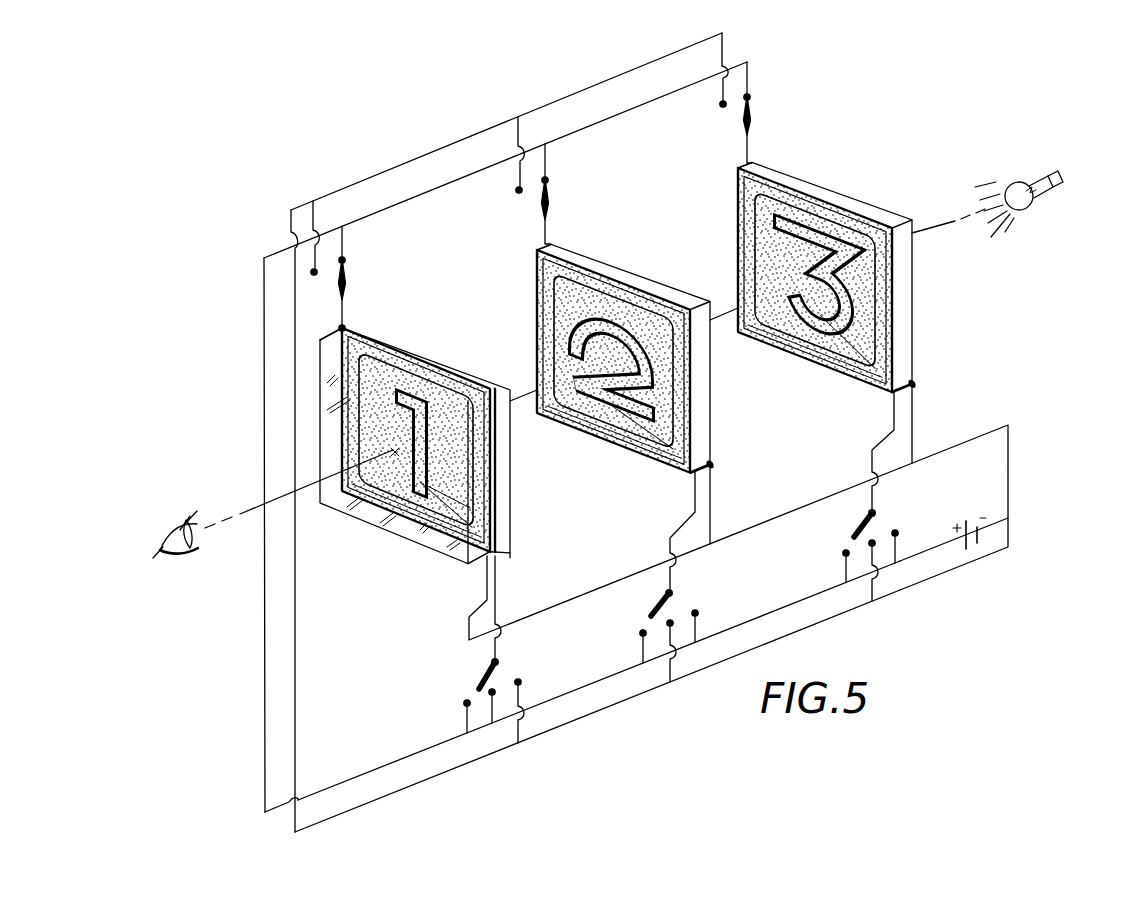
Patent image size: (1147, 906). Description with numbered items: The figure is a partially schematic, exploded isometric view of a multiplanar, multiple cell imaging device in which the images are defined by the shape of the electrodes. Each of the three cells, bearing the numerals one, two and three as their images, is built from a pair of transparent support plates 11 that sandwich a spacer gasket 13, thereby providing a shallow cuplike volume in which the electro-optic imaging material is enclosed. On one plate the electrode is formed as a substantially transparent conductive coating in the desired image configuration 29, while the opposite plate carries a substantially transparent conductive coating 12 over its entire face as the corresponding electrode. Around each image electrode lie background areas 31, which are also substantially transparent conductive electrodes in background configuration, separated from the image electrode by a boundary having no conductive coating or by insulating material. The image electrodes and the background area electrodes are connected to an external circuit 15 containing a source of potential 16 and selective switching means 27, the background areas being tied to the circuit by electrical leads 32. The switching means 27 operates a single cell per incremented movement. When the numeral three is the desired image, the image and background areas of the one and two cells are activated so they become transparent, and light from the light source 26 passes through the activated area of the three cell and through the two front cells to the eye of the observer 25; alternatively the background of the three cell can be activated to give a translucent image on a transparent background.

The transparent support plates 11 is at (327, 341).
The substantially transparent conductive coating 12 is at (827, 175).
The spacer gasket 13 is at (453, 373).
The external circuit 15 is at (1018, 472).
The source of potential 16 is at (966, 519).
The eye of the observer 25 is at (160, 542).
The light source 26 is at (1062, 181).
The selective switching means 27 is at (385, 270).
The electrodes in the desired image configuration 29 is at (403, 527).
The background areas 31 is at (356, 515).
The electrical leads 32 is at (348, 305).